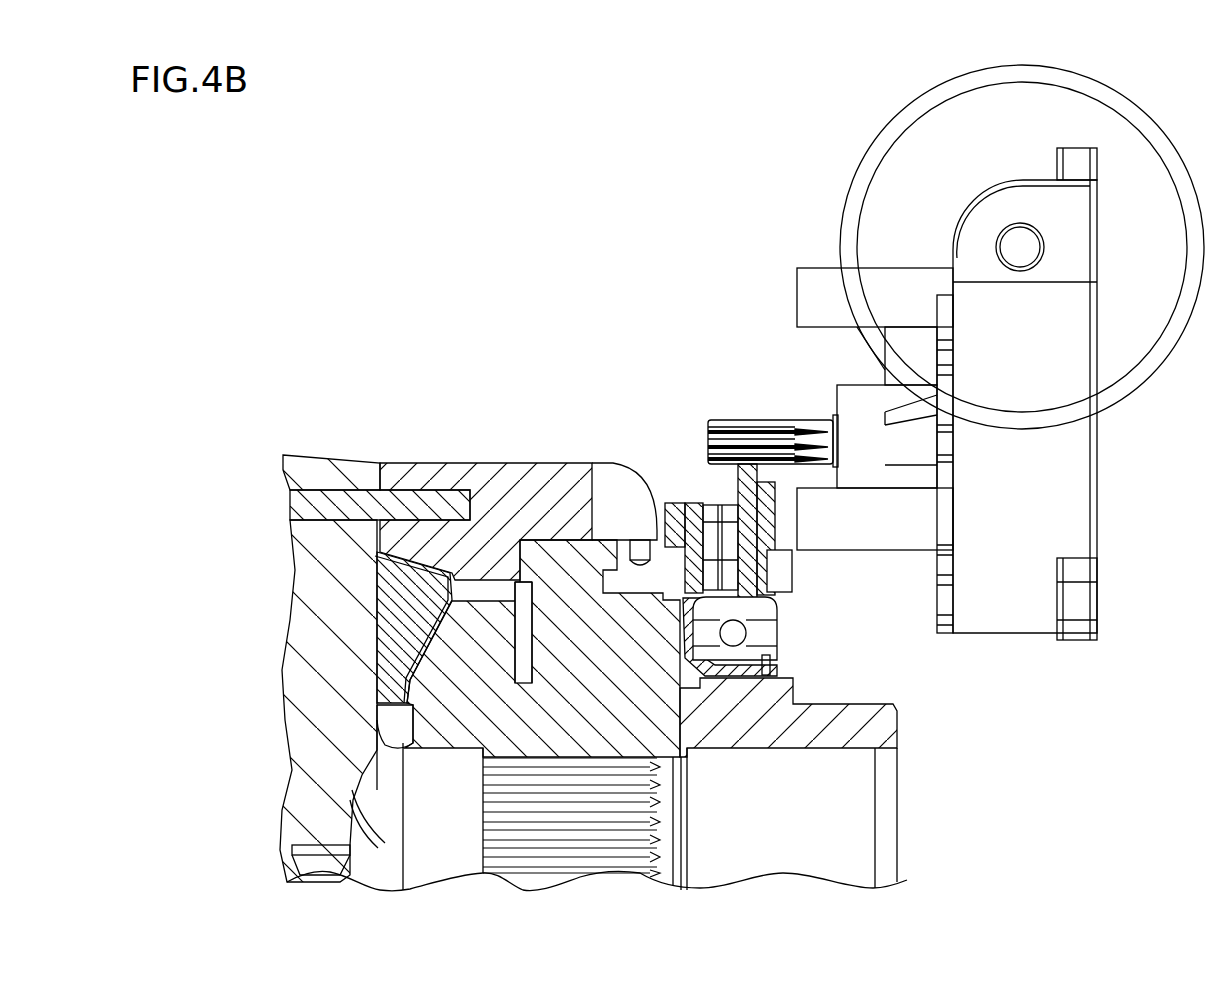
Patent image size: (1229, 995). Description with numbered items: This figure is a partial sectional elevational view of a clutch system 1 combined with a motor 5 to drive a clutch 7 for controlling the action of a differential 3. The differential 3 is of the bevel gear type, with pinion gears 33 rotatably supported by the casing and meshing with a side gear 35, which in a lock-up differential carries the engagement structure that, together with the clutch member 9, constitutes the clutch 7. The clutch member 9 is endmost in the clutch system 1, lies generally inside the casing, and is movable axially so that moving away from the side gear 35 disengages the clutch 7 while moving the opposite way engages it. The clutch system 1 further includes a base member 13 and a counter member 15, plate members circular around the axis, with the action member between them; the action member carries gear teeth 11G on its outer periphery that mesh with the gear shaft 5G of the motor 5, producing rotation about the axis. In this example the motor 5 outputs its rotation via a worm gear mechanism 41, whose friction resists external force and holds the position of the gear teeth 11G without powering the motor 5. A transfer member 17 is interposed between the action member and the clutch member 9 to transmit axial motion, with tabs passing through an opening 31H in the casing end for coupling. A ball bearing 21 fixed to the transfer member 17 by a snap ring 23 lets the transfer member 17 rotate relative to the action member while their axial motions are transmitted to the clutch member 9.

The clutch system 1 is at (720, 348).
The differential 3 is at (335, 348).
The motor 5 is at (1133, 102).
The gear shaft 5G is at (747, 420).
The clutch 7 is at (570, 412).
The clutch member 9 is at (547, 535).
The gear teeth 11G is at (745, 473).
The base member 13 is at (765, 527).
The counter member 15 is at (690, 498).
The transfer member 17 is at (780, 672).
The ball bearing 21 is at (767, 628).
The snap ring 23 is at (770, 665).
The opening 31H is at (613, 478).
The pinion gears 33 is at (400, 472).
The side gear 35 is at (485, 598).
The worm gear mechanism 41 is at (1102, 485).